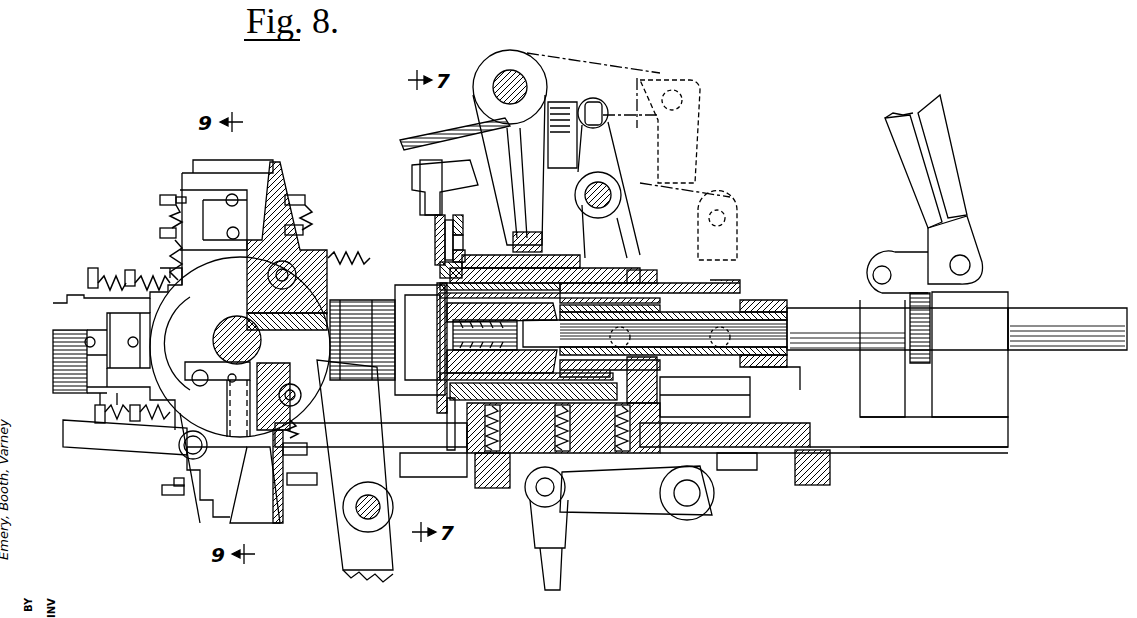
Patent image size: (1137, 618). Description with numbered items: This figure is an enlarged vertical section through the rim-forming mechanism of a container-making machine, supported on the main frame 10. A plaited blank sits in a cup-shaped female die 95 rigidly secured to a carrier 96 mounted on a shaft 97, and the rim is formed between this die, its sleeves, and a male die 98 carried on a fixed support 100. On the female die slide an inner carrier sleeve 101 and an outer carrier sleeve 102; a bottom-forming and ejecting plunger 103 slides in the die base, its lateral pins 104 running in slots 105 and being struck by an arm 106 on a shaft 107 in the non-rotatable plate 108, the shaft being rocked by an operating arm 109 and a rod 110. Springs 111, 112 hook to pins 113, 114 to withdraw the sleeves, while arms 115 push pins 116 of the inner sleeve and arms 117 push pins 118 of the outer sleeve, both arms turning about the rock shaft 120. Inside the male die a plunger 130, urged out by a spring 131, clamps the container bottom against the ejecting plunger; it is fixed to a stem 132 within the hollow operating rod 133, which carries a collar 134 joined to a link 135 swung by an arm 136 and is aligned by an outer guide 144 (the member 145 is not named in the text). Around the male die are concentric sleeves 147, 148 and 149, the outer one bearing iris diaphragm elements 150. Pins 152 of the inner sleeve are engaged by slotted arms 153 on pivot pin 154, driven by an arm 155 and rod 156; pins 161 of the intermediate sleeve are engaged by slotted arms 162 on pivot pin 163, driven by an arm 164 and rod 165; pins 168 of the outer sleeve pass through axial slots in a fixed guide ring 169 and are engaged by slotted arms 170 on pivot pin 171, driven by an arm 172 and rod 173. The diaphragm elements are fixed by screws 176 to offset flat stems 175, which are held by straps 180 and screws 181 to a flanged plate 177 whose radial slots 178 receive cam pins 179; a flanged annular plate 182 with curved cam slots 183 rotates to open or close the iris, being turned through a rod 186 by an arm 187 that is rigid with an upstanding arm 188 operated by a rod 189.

The main frame 10 is at (830, 475).
The cup-shaped female die 95 is at (372, 320).
The carrier 96 is at (300, 250).
The shaft 97 is at (203, 330).
The male die 98 is at (408, 300).
The fixed support 100 is at (778, 460).
The inner carrier sleeve 101 is at (450, 286).
The outer carrier sleeve 102 is at (395, 275).
The bottom-forming and ejecting plunger 103 is at (400, 350).
The lateral pins 104 is at (288, 272).
The slots 105 is at (250, 470).
The arm 106 is at (212, 344).
The shaft 107 is at (192, 374).
The non-rotatable plate 108 is at (175, 278).
The operating arm 109 is at (175, 450).
The rod 110 is at (100, 445).
The spring 111 is at (172, 255).
The spring 112 is at (170, 213).
The pins 113 is at (168, 195).
The pins 114 is at (110, 276).
The arms 115 is at (338, 500).
The pins 116 is at (80, 330).
The arms 117 is at (395, 462).
The pins 118 is at (60, 352).
The rock shaft 120 is at (380, 512).
The plunger 130 is at (400, 339).
The spring 131 is at (483, 331).
The stem 132 is at (548, 339).
The hollow operating rod 133 is at (825, 318).
The collar 134 is at (888, 360).
The link 135 is at (905, 262).
The arm 136 is at (955, 189).
The outer guide 144 is at (1010, 401).
The housing 145 is at (680, 409).
The inner sleeve 147 is at (690, 279).
The intermediate sleeve 148 is at (640, 263).
The outer sleeve 149 is at (640, 241).
The iris diaphragm elements 150 is at (445, 269).
The pins 152 is at (770, 311).
The slotted arms 153 is at (722, 481).
The pivot pin 154 is at (698, 512).
The arm 155 is at (648, 512).
The rod 156 is at (562, 579).
The pins 161 is at (712, 310).
The slotted arms 162 is at (638, 223).
The pivot pin 163 is at (616, 190).
The arm 164 is at (712, 195).
The rod 165 is at (740, 239).
The pins 168 is at (592, 228).
The fixed guide ring 169 is at (565, 249).
The slotted arms 170 is at (490, 159).
The pivot pin 171 is at (518, 75).
The arm 172 is at (615, 73).
The rod 173 is at (692, 141).
The offset flat stems 175 is at (442, 201).
The screws 176 is at (437, 259).
The flanged plate 177 is at (448, 410).
The radial slots 178 is at (465, 256).
The cam pins 179 is at (437, 246).
The straps 180 is at (435, 229).
The screws 181 is at (445, 236).
The flanged annular plate 182 is at (463, 223).
The curved cam slots 183 is at (463, 241).
The rod 186 is at (440, 211).
The arm 187 is at (555, 166).
The upstanding arm 188 is at (608, 124).
The rod 189 is at (425, 138).